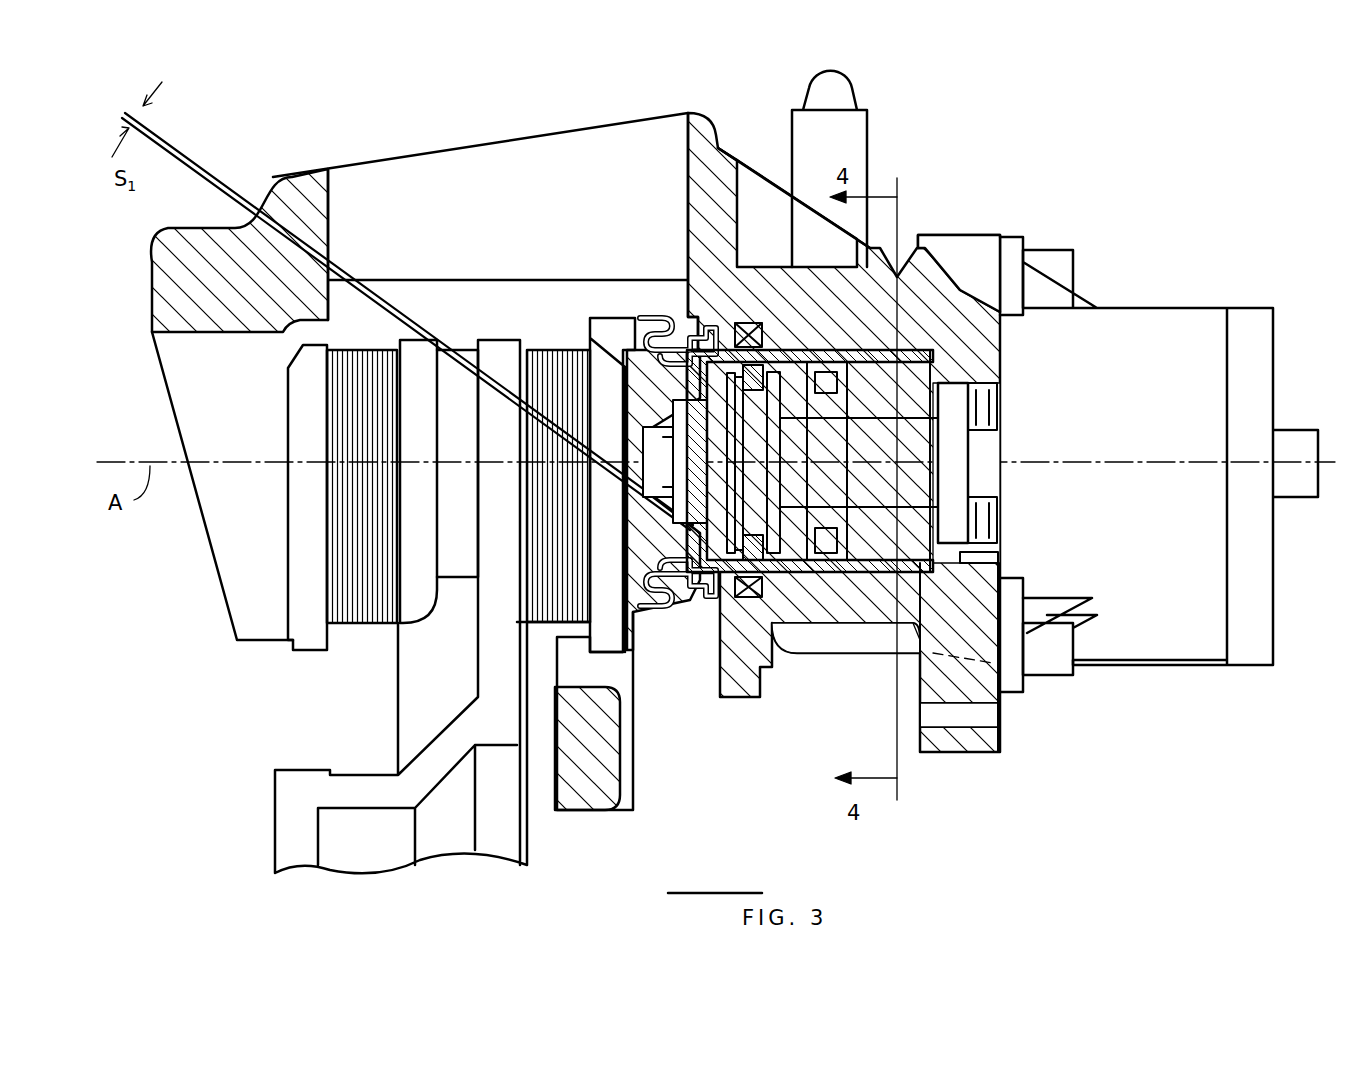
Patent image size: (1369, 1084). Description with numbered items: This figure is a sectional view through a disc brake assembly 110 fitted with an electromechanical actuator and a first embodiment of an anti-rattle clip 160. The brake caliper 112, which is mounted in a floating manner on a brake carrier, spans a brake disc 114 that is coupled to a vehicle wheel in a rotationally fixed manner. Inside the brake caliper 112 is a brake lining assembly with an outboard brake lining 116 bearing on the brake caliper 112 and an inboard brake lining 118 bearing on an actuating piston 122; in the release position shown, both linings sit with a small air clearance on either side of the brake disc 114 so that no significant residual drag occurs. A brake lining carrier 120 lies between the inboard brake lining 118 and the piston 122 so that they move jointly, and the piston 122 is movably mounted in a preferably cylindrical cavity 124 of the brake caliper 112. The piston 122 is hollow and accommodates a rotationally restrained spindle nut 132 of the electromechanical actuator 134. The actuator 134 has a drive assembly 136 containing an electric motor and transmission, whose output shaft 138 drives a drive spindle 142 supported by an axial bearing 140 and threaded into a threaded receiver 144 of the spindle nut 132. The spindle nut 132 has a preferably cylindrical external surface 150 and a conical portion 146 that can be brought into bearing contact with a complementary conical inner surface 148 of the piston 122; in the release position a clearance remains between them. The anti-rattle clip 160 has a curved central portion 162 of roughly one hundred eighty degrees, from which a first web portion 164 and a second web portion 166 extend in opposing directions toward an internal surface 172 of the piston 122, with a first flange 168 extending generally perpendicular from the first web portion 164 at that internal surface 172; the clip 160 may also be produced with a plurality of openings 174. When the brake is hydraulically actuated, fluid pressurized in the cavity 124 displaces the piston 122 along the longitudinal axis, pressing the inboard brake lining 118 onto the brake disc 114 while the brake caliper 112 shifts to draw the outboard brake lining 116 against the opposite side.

The disc brake assembly 110 is at (1092, 200).
The brake caliper 112 is at (357, 205).
The brake disc 114 is at (412, 678).
The outboard brake lining 116 is at (345, 413).
The inboard brake lining 118 is at (537, 340).
The brake lining carrier 120 is at (583, 337).
The actuating piston 122 is at (778, 345).
The cylindrical cavity 124 is at (962, 300).
The spindle nut 132 is at (882, 404).
The electromechanical actuator 134 is at (1179, 304).
The drive assembly 136 is at (1163, 625).
The output shaft 138 is at (988, 450).
The axial bearing 140 is at (985, 330).
The drive spindle 142 is at (958, 513).
The threaded receiver 144 is at (891, 452).
The conical portion 146 is at (655, 385).
The conical inner surface 148 is at (607, 368).
The external surface 150 is at (993, 532).
The anti-rattle clip 160 is at (853, 466).
The curved central portion 162 is at (833, 475).
The first web portion 164 is at (858, 336).
The second web portion 166 is at (960, 563).
The first flange 168 is at (822, 356).
The internal surface 172 is at (880, 600).
The openings 174 is at (807, 592).